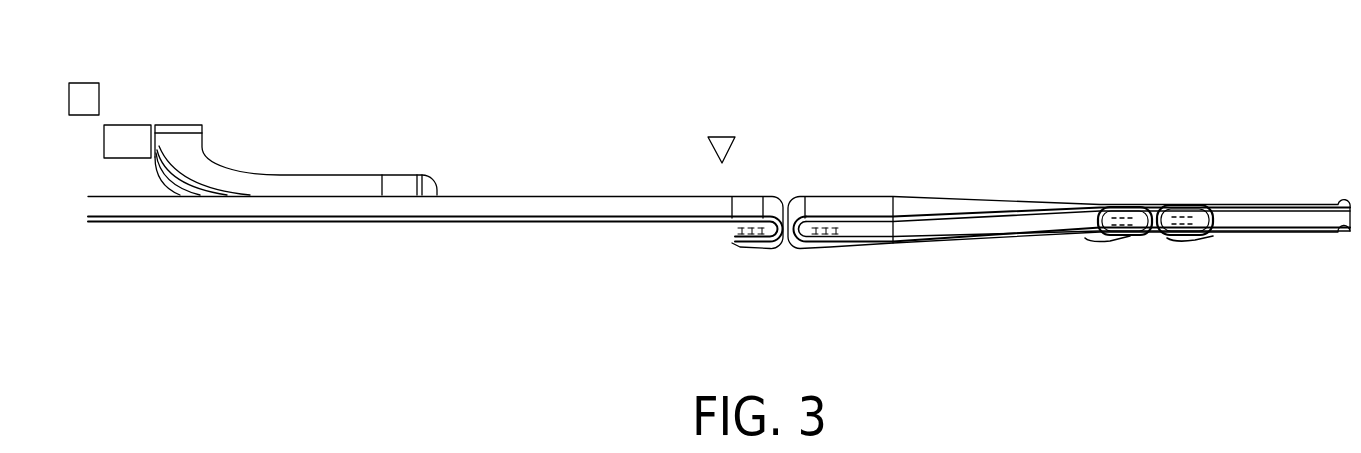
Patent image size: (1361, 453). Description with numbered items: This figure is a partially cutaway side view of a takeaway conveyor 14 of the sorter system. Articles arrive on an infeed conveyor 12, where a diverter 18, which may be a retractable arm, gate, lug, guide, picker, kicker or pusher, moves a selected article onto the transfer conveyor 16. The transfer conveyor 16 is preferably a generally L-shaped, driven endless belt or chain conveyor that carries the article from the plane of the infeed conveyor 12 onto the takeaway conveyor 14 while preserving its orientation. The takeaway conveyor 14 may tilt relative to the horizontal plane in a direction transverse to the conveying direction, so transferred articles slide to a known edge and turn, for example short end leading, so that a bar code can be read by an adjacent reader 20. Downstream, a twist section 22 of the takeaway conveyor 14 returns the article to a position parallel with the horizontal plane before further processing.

The infeed conveyor 12 is at (122, 125).
The takeaway conveyor 14 is at (512, 196).
The transfer conveyor 16 is at (290, 175).
The diverter 18 is at (82, 82).
The reader 20 is at (737, 141).
The twist section 22 is at (927, 197).